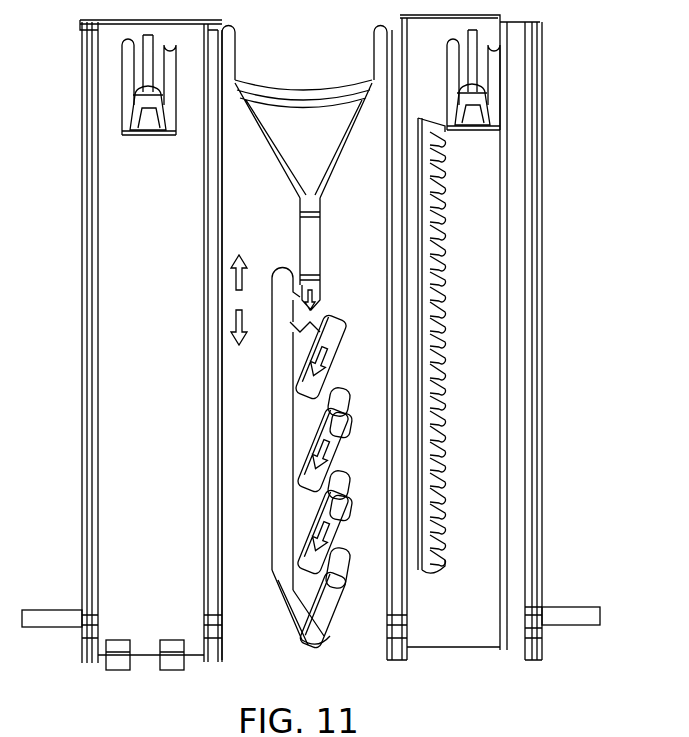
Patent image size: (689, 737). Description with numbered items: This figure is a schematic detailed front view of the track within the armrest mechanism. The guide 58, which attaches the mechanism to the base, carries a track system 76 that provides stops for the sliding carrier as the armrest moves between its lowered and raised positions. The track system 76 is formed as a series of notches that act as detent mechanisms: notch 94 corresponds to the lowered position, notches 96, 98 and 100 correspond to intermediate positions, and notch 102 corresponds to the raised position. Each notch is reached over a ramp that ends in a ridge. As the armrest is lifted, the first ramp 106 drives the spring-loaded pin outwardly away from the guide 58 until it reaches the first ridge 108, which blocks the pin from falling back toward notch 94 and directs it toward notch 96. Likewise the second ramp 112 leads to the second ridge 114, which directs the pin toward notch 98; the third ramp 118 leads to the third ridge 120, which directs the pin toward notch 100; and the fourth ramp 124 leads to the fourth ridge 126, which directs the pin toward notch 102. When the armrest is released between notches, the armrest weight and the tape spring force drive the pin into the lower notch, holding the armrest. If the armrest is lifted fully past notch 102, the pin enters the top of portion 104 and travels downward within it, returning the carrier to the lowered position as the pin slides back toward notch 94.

The guide 58 is at (113, 492).
The track system 76 is at (319, 484).
The notch 94 is at (330, 600).
The notch 96 is at (325, 590).
The notch 98 is at (315, 492).
The notch 100 is at (300, 420).
The notch 102 is at (300, 342).
The portion 104 is at (278, 375).
The first ramp 106 is at (343, 603).
The first ridge 108 is at (343, 555).
The second ramp 112 is at (345, 503).
The second ridge 114 is at (343, 490).
The third ramp 118 is at (345, 418).
The third ridge 120 is at (333, 390).
The fourth ramp 124 is at (343, 320).
The fourth ridge 126 is at (320, 300).